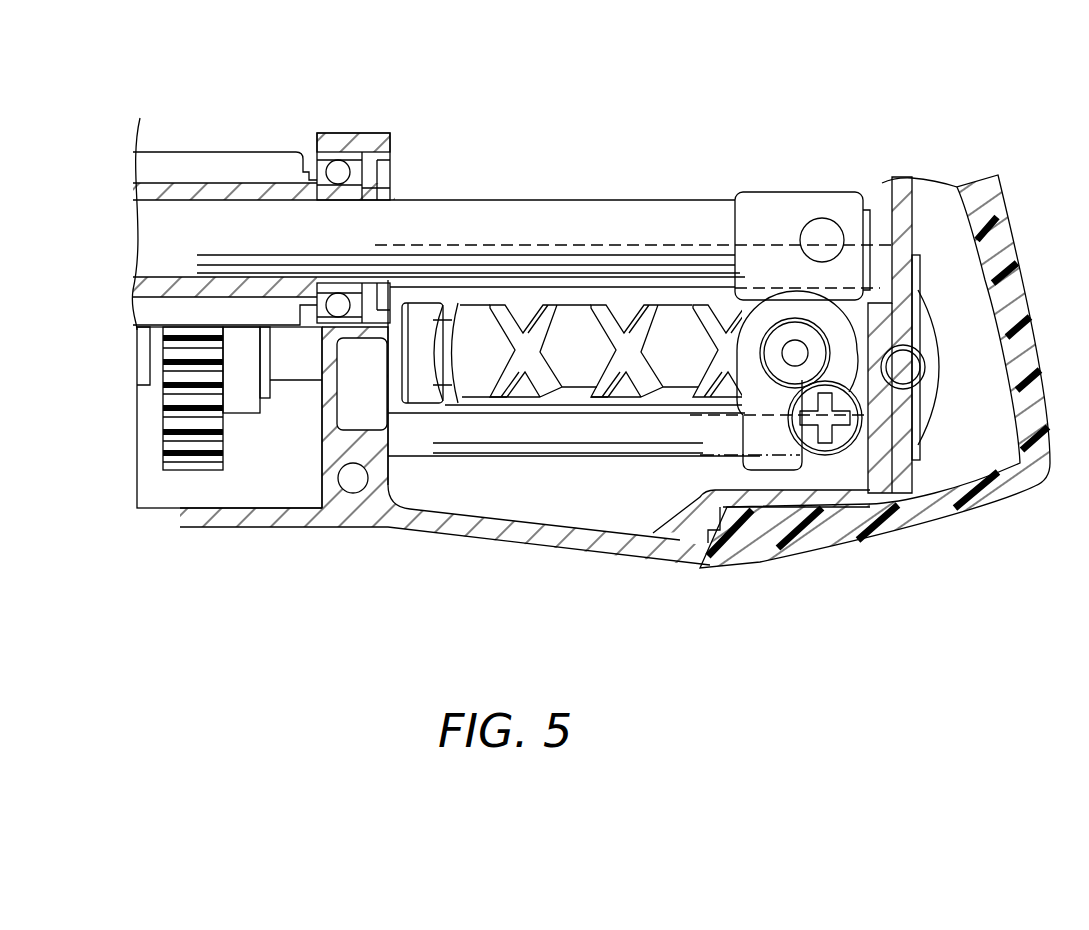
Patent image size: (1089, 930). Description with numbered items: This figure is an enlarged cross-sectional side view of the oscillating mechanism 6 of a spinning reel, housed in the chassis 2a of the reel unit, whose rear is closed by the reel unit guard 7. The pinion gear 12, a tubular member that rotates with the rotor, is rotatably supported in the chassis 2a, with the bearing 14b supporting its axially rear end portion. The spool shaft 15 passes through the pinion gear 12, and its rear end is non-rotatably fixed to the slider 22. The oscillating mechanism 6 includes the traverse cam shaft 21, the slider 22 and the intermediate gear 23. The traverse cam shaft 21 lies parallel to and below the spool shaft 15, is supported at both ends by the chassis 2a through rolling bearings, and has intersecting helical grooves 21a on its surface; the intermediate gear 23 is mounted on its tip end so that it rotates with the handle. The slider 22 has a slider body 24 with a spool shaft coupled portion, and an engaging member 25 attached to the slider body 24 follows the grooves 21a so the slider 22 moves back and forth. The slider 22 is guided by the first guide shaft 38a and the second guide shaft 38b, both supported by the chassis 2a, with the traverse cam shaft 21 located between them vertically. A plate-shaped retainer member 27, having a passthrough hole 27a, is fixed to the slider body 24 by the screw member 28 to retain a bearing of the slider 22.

The pinion gear 12 is at (220, 148).
The bearing 14b is at (322, 132).
The spool shaft 15 is at (563, 195).
The first guide shaft 38a is at (645, 243).
The slider body 24 is at (785, 188).
The slider 22 is at (800, 183).
The engaging member 25 is at (795, 353).
The intermediate gear 23 is at (193, 470).
The chassis 2a is at (383, 540).
The traverse cam shaft 21 is at (620, 405).
The intersecting helical grooves 21a is at (500, 395).
The second guide shaft 38b is at (558, 435).
The oscillating mechanism 6 is at (673, 493).
The retainer member 27 is at (775, 432).
The passthrough hole 27a is at (782, 385).
The screw member 28 is at (828, 455).
The reel unit guard 7 is at (1008, 505).